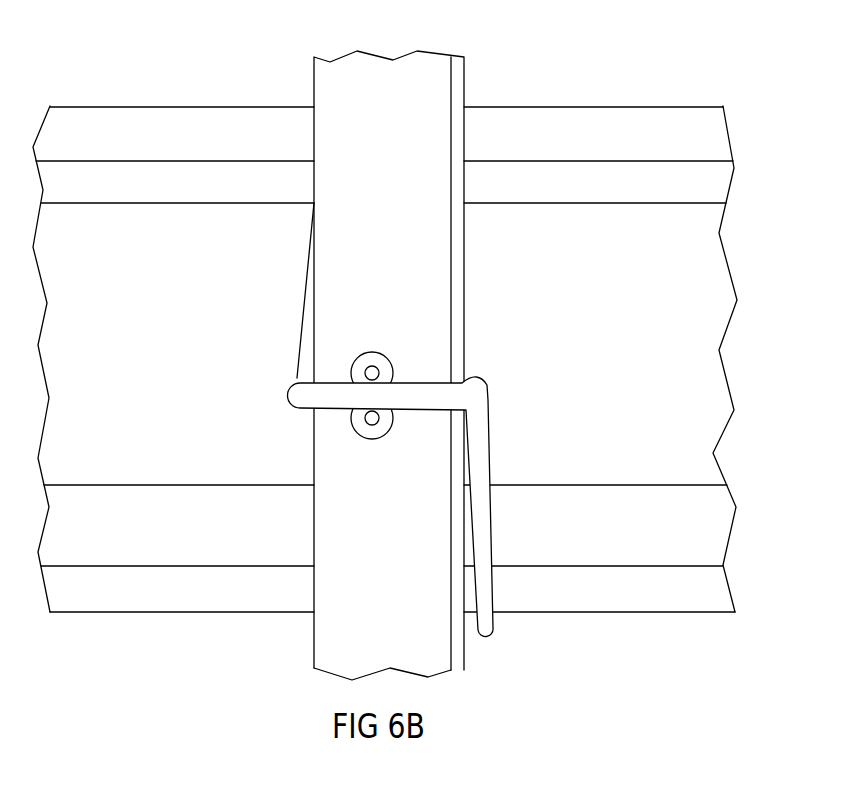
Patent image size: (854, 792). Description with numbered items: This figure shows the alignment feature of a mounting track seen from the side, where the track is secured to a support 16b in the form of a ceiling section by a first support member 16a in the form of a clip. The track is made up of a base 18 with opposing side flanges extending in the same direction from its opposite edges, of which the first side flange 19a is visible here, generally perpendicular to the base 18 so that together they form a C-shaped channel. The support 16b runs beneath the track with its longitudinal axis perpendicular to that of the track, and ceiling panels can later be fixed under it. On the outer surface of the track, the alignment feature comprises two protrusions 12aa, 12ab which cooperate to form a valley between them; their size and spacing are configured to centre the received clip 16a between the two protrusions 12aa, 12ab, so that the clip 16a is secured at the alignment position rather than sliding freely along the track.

The support 16b is at (117, 249).
The base 18 is at (486, 75).
The first side flange 19a is at (444, 324).
The protrusion 12aa is at (371, 352).
The protrusion 12ab is at (377, 432).
The first support member 16a is at (506, 448).